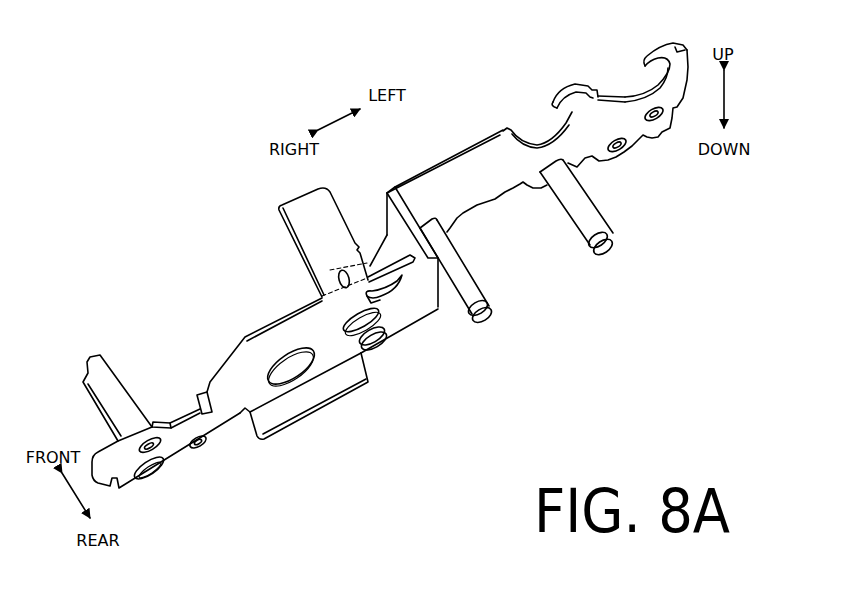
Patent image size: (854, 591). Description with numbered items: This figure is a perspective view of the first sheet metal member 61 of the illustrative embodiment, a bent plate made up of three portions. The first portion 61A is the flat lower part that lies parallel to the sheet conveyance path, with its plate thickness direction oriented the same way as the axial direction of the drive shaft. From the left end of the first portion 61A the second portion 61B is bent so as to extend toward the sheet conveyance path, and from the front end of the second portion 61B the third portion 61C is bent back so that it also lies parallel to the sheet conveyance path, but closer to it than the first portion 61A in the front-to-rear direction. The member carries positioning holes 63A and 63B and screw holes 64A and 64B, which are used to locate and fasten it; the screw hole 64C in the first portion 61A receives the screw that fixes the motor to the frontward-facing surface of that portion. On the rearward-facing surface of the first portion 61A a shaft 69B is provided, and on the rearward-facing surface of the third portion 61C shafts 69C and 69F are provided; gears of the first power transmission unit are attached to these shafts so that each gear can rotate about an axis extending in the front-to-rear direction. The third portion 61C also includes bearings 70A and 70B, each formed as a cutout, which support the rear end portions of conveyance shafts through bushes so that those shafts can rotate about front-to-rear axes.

The first sheet metal member 61 is at (236, 300).
The first portion 61A is at (258, 393).
The second portion 61B is at (396, 230).
The third portion 61C is at (497, 182).
The positioning hole 63A is at (147, 467).
The positioning hole 63B is at (656, 118).
The screw hole 64A is at (152, 443).
The screw hole 64B is at (619, 149).
The screw hole 64C is at (200, 446).
The shaft 69B is at (377, 348).
The shaft 69C is at (487, 320).
The shaft 69F is at (607, 250).
The bearing 70A is at (543, 138).
The bearing 70B is at (643, 95).